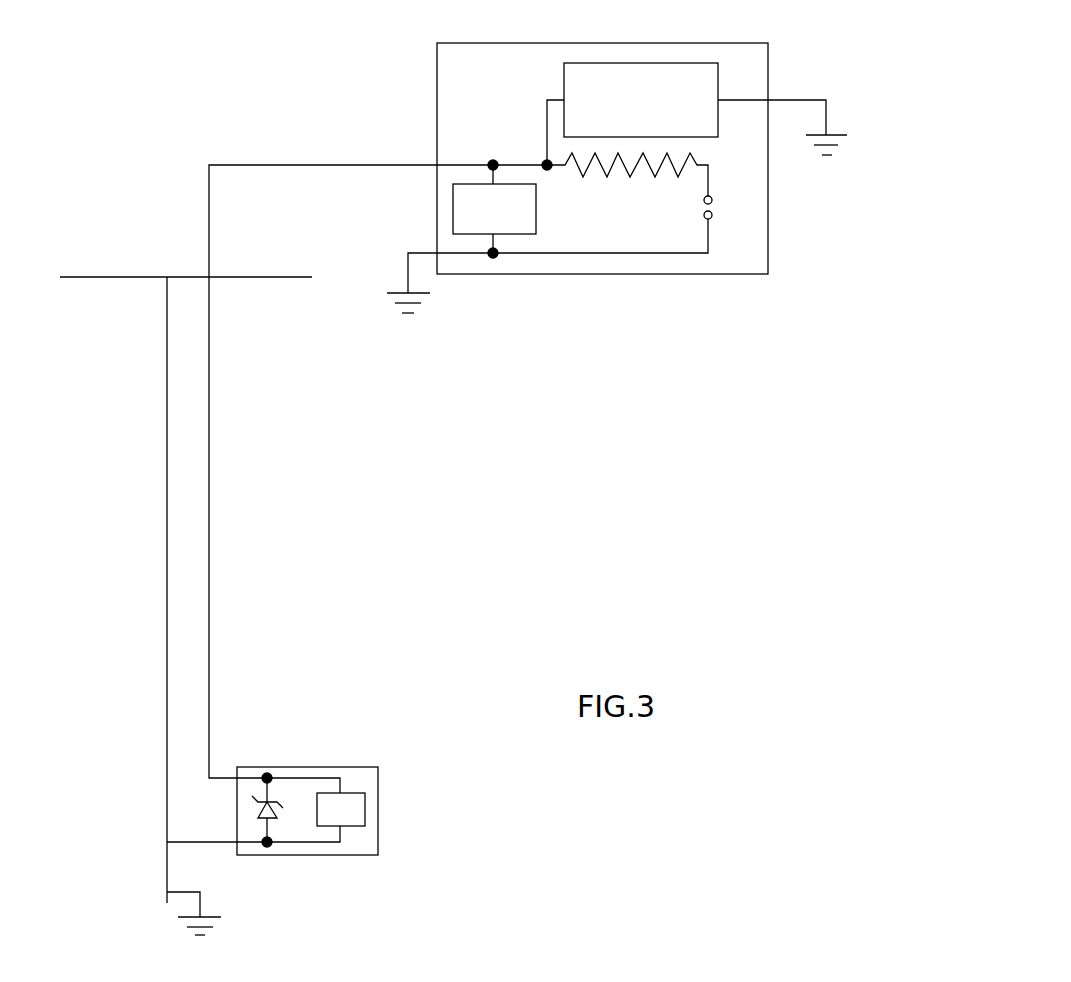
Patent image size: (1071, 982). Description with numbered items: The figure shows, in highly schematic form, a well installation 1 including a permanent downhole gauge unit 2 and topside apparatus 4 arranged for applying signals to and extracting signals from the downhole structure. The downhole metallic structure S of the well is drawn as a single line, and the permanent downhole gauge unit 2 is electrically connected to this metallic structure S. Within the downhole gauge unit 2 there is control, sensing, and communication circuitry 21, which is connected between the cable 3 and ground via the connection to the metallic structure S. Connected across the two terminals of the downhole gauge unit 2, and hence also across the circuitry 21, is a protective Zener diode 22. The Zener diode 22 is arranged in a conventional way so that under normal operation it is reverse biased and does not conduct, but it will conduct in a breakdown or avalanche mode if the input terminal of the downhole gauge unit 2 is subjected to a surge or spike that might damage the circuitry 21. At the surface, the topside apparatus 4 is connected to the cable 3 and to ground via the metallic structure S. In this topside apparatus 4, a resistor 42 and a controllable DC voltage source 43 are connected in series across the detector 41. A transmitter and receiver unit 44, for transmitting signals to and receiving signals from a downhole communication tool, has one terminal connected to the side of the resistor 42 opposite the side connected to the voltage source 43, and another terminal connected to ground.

The well installation 1 is at (88, 402).
The downhole metallic structure S is at (167, 517).
The permanent downhole gauge unit 2 is at (363, 767).
The control, sensing, and communication circuitry 21 is at (357, 814).
The protective Zener diode 22 is at (275, 810).
The cable 3 is at (211, 560).
The topside apparatus 4 is at (453, 85).
The detector 41 is at (528, 228).
The resistor 42 is at (613, 170).
The controllable DC voltage source 43 is at (713, 222).
The transmitter and receiver unit 44 is at (707, 80).